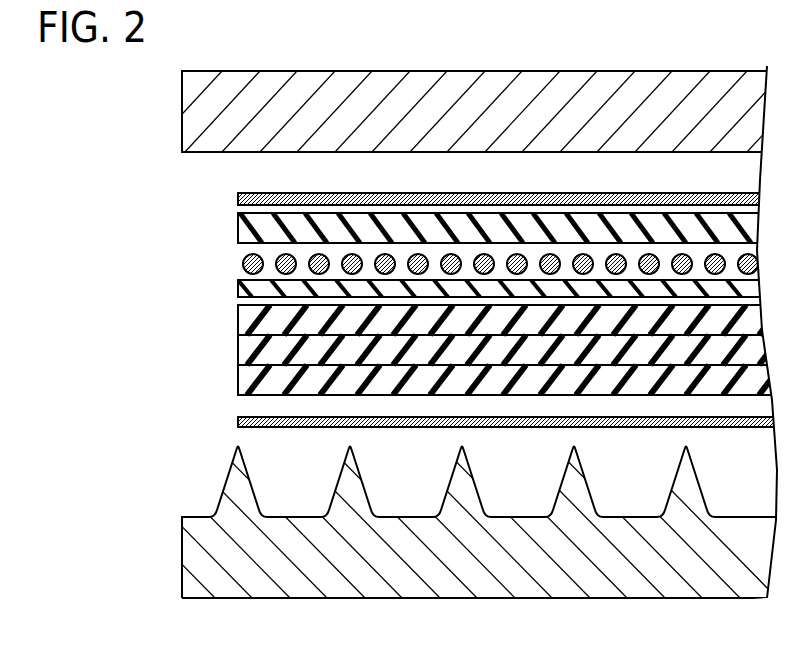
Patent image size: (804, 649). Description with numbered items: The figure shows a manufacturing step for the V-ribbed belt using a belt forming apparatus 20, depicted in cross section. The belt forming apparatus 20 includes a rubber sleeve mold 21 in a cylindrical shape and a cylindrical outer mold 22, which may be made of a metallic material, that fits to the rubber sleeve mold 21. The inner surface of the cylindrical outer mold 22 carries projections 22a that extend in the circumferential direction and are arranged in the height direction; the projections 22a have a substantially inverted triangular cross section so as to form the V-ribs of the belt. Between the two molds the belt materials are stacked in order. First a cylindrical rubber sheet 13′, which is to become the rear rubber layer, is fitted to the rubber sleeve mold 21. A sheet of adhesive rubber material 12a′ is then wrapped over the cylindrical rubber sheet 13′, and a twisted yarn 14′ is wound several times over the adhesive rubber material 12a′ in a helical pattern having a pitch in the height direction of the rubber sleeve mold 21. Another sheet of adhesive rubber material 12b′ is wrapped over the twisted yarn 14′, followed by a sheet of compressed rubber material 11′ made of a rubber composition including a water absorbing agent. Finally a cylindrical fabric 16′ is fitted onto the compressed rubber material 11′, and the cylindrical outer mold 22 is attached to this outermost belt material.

The belt forming apparatus 20 is at (73, 252).
The rubber sleeve mold 21 is at (190, 122).
The cylindrical outer mold 22 is at (192, 557).
The projections 22a is at (694, 488).
The cylindrical rubber sheet 13′ is at (238, 199).
The adhesive rubber material 12a′ is at (240, 228).
The twisted yarn 14′ is at (615, 252).
The adhesive rubber material 12b′ is at (240, 288).
The compressed rubber material 11′ is at (247, 373).
The cylindrical fabric 16′ is at (238, 422).